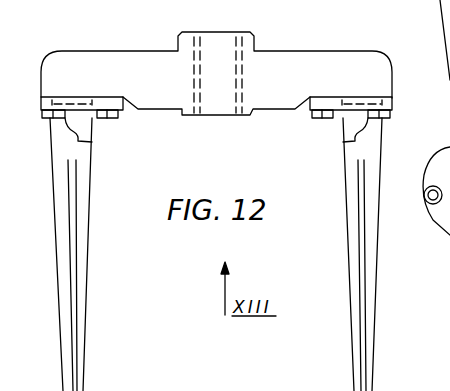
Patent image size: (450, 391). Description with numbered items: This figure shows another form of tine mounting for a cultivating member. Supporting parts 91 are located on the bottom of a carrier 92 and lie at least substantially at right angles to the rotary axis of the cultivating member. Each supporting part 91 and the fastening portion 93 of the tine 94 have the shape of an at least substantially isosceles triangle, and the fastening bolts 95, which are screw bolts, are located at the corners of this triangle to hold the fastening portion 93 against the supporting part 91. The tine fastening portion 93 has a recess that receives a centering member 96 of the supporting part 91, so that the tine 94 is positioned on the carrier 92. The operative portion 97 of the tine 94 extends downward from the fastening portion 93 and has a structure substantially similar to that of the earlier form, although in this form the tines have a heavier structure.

The supporting part 91 is at (115, 97).
The carrier 92 is at (272, 52).
The fastening portion 93 is at (128, 111).
The tine 94 is at (92, 198).
The fastening bolt 95 is at (110, 119).
The centering member 96 is at (77, 98).
The operative portion 97 is at (82, 277).